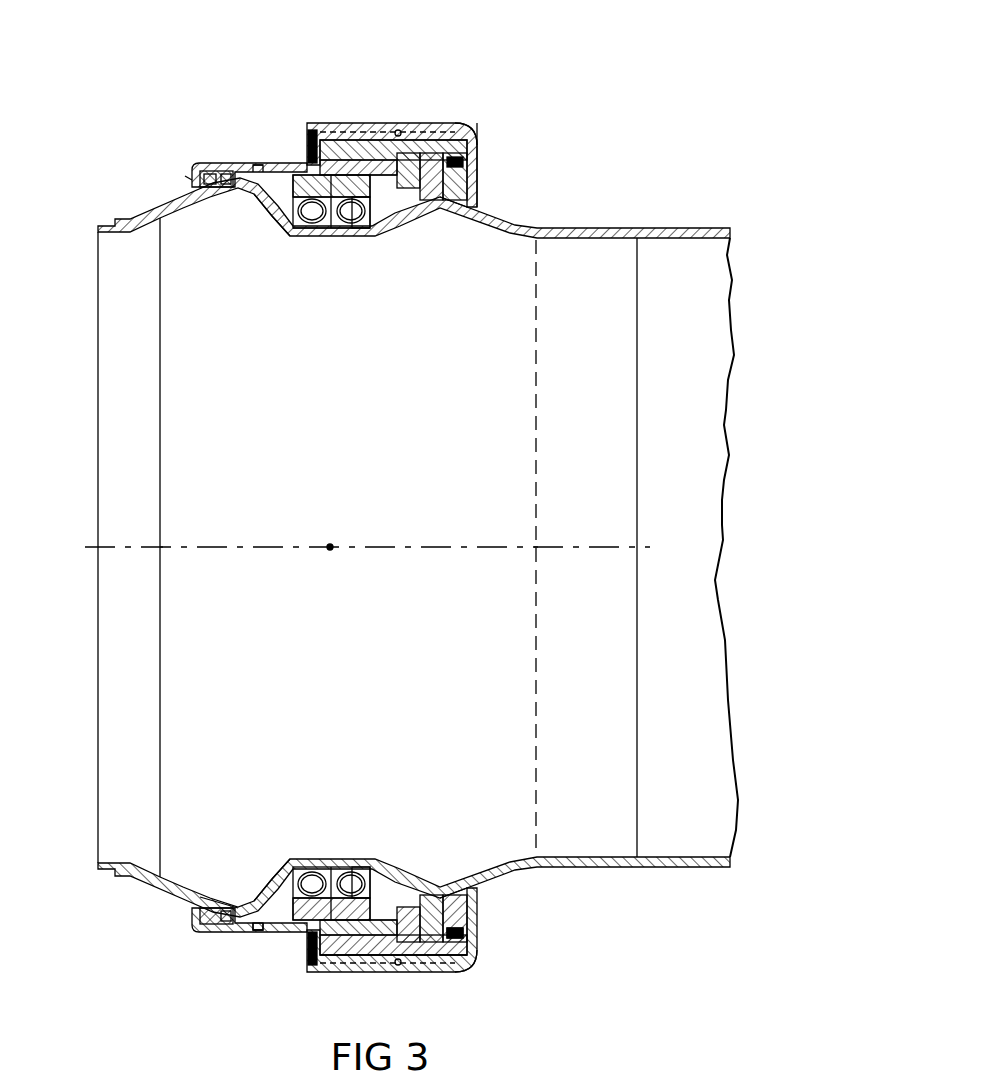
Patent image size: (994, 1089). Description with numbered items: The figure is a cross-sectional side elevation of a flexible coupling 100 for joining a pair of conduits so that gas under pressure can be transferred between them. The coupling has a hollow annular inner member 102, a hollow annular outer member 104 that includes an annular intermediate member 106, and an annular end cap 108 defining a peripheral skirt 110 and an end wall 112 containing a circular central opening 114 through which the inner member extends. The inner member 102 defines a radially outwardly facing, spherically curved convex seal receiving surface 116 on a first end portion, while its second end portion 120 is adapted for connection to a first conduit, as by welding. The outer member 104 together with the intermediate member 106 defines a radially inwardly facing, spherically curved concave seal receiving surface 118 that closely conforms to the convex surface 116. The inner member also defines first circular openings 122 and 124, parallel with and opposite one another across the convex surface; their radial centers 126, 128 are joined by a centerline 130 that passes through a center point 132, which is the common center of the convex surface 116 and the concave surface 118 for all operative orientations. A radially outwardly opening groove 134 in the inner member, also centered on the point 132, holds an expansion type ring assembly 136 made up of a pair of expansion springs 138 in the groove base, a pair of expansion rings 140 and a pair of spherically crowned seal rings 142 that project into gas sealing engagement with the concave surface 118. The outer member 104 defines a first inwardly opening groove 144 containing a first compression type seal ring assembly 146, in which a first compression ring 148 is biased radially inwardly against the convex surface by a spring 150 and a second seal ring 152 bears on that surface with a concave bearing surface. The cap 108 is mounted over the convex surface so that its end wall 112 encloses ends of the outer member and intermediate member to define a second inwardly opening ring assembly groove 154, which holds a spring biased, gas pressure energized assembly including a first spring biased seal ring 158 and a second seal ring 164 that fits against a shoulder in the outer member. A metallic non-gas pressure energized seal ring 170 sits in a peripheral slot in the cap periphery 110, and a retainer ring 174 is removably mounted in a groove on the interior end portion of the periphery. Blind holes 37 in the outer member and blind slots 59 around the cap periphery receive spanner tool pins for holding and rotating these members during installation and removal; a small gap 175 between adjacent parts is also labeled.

The blind holes 37 is at (258, 165).
The blind notches or slots 59 is at (455, 124).
The flexible coupling 100 is at (527, 138).
The inner member 102 is at (545, 226).
The outer member 104 is at (237, 160).
The intermediate member 106 is at (375, 186).
The end cap 108 is at (415, 122).
The peripheral skirt 110 is at (345, 142).
The end wall 112 is at (478, 182).
The circular central opening 114 is at (473, 208).
The convex seal receiving surface 116 is at (270, 163).
The concave seal receiving surface 118 is at (243, 192).
The second end portion 120 is at (565, 239).
The first circular opening 122 is at (160, 385).
The circular opening 124 is at (537, 440).
The radial center 126 is at (163, 547).
The radial center 128 is at (536, 549).
The centerline 130 is at (385, 547).
The center point 132 is at (330, 550).
The radially outwardly opening groove 134 is at (312, 216).
The expansion type ring assembly 136 is at (375, 218).
The expansion springs 138 is at (317, 238).
The expansion rings 140 is at (260, 931).
The seal rings 142 is at (365, 971).
The first inwardly opening groove 144 is at (220, 873).
The first compression type seal ring assembly 146 is at (187, 177).
The first compression ring 148 is at (185, 180).
The spring 150 is at (216, 190).
The second seal ring 152 is at (212, 172).
The second inwardly opening ring assembly groove 154 is at (450, 923).
The first spring biased seal ring 158 is at (455, 202).
The second seal ring 164 is at (450, 156).
The metallic non-gas pressure energized seal ring 170 is at (396, 130).
The retainer ring 174 is at (312, 128).
The gap 175 is at (388, 178).